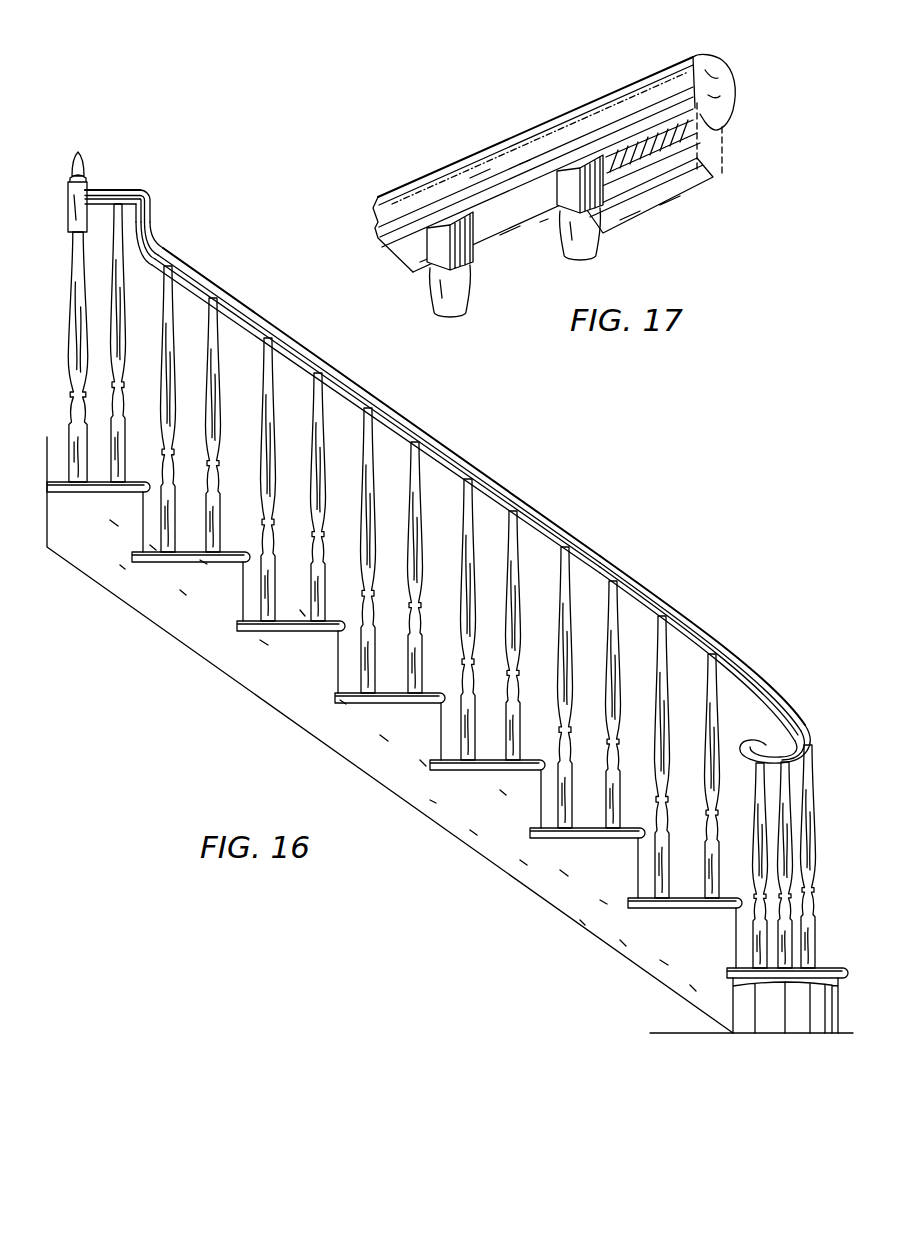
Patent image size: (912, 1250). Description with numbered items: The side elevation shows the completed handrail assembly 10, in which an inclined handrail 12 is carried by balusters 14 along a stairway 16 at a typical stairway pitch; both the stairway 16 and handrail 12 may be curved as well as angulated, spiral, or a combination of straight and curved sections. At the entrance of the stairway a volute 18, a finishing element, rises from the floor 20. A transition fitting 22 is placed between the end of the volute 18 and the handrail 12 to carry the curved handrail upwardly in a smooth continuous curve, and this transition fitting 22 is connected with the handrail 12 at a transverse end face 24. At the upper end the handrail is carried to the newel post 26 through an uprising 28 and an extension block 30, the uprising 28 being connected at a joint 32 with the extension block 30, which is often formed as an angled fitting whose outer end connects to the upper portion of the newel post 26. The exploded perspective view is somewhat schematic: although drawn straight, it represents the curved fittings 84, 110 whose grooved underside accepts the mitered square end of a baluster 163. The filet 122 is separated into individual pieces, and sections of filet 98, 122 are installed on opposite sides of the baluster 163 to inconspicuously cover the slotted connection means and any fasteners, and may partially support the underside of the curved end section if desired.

In FIG. 16, the handrail assembly 10 is at (447, 614).
In FIG. 16, the handrail 12 is at (474, 451).
In FIG. 16, the balusters 14 is at (323, 463).
In FIG. 16, the stairway 16 is at (495, 867).
In FIG. 16, the volute 18 is at (747, 766).
In FIG. 16, the floor 20 is at (685, 1035).
In FIG. 16, the transition fitting 22 is at (811, 712).
In FIG. 16, the transverse end face 24 is at (786, 683).
In FIG. 16, the newel post 26 is at (67, 206).
In FIG. 16, the uprising 28 is at (151, 221).
In FIG. 16, the extension block 30 is at (117, 187).
In FIG. 16, the joint 32 is at (149, 192).
In FIG. 17, the curved fitting 84 is at (554, 160).
In FIG. 17, the curved fitting 110 is at (571, 113).
In FIG. 17, the filet 98 is at (670, 205).
In FIG. 17, the filet 122 is at (679, 198).
In FIG. 17, the baluster 163 is at (462, 294).